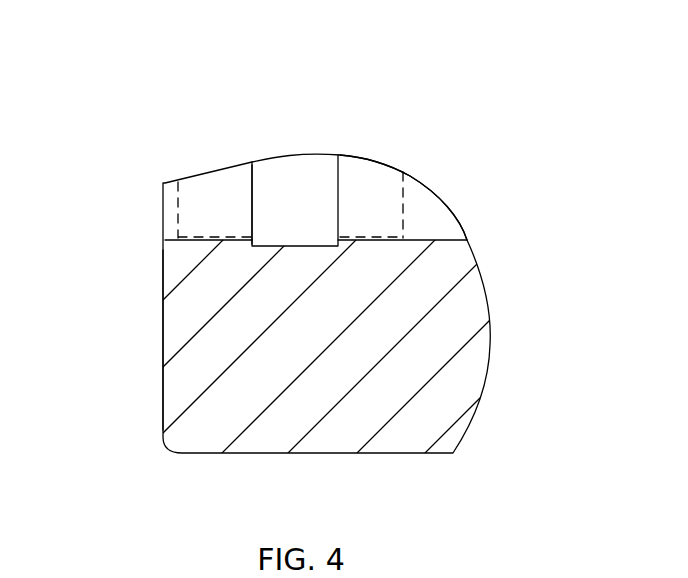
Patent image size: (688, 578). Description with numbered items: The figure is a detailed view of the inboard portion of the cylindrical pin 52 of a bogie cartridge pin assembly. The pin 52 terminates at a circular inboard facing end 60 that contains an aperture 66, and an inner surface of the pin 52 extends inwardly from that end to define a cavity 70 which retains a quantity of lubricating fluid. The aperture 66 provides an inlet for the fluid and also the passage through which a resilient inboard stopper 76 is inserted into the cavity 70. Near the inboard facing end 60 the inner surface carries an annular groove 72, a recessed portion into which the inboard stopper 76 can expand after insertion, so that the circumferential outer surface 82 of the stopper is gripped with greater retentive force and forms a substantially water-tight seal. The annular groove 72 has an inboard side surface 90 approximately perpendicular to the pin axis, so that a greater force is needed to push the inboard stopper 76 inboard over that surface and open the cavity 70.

The cylindrical pin 52 is at (162, 358).
The inboard facing end 60 is at (162, 318).
The aperture 66 is at (162, 242).
The cavity 70 is at (415, 213).
The annular groove 72 is at (305, 174).
The inboard stopper 76 is at (228, 205).
The circumferential outer surface 82 is at (377, 167).
The inboard side surface 90 is at (257, 207).